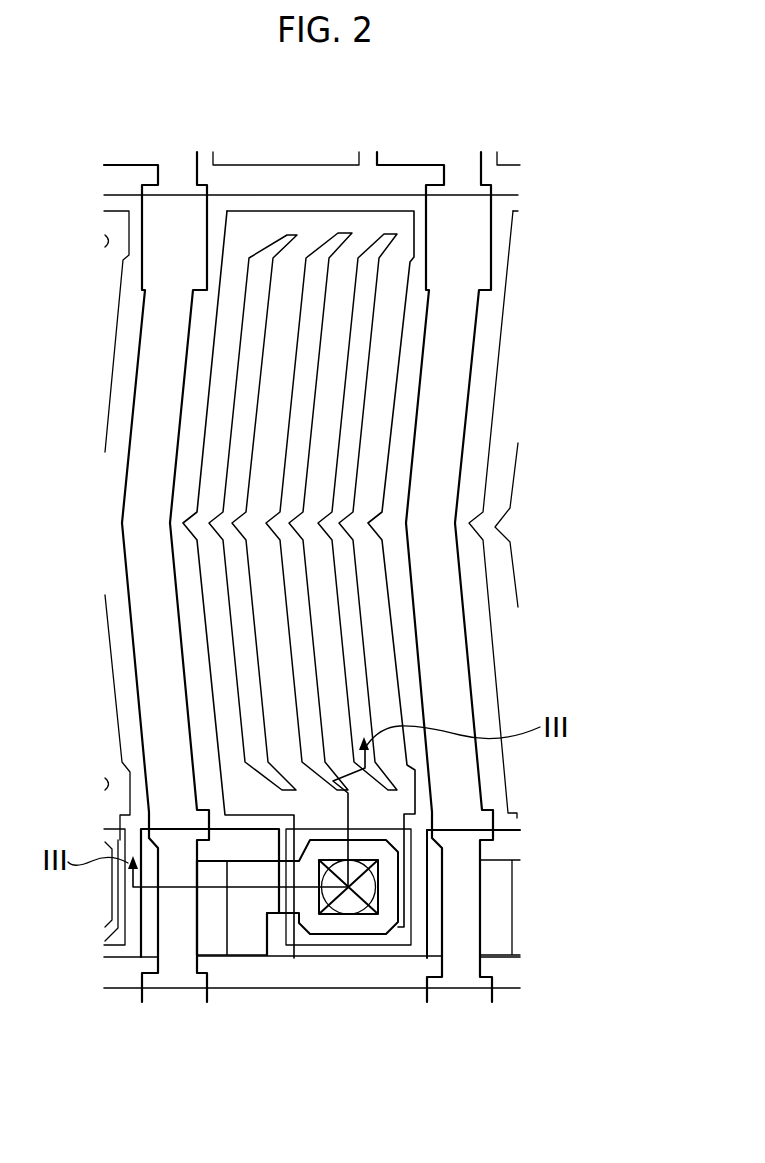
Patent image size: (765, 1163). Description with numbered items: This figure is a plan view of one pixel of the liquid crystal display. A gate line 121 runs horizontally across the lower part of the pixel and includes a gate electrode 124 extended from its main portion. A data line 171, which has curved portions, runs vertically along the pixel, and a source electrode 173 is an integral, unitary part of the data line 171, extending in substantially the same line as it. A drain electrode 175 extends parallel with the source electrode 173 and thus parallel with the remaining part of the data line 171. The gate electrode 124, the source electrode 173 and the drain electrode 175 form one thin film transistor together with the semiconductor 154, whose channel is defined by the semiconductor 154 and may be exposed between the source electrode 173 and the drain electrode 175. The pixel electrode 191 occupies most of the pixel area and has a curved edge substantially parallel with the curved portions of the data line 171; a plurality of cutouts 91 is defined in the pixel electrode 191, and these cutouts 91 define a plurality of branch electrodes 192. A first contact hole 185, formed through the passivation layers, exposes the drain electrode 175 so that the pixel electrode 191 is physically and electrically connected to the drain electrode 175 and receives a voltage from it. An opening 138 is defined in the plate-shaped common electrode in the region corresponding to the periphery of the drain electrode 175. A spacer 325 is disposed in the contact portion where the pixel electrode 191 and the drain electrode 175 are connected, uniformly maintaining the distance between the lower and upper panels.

The data line 171 is at (124, 551).
The pixel electrode 191 is at (415, 790).
The branch electrodes 192 is at (315, 660).
The cutouts 91 is at (293, 383).
The gate electrode 124 is at (140, 920).
The gate line 121 is at (390, 958).
The semiconductor 154 is at (218, 958).
The source electrode 173 is at (197, 922).
The drain electrode 175 is at (268, 916).
The first contact hole 185 is at (338, 914).
The spacer 325 is at (358, 914).
The opening 138 is at (410, 900).